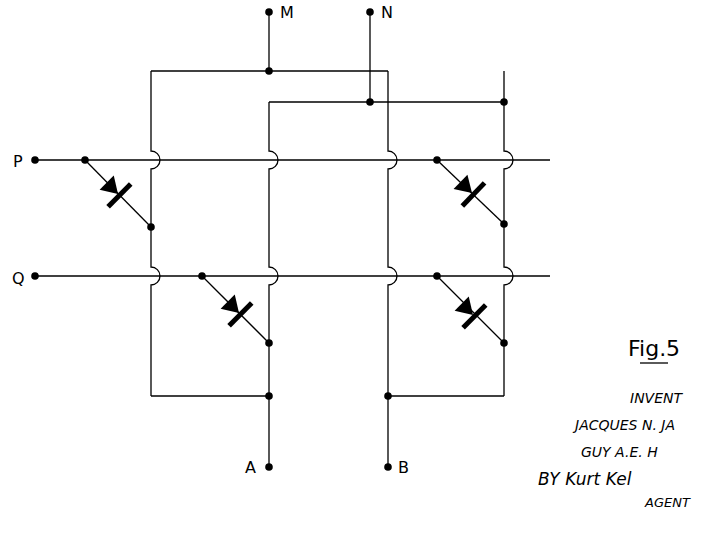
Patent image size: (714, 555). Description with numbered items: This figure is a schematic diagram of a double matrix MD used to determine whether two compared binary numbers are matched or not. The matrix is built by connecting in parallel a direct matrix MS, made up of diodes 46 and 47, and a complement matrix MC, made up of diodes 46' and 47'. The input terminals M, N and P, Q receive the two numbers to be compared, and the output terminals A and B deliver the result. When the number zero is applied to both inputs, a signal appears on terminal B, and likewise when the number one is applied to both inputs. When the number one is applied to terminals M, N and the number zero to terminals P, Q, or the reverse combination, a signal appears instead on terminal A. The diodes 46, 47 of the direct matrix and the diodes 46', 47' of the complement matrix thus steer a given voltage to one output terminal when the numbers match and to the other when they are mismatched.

The diode 46 is at (106, 193).
The diode 47 is at (223, 309).
The diode 47' is at (460, 192).
The diode 46' is at (457, 309).